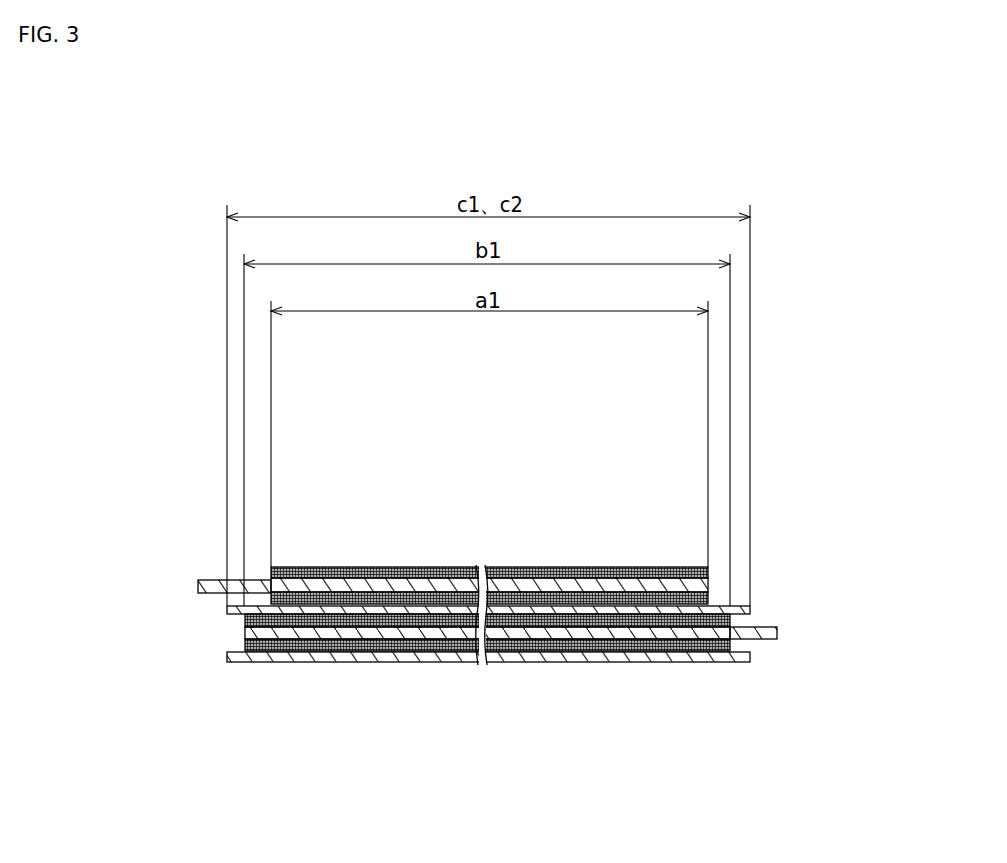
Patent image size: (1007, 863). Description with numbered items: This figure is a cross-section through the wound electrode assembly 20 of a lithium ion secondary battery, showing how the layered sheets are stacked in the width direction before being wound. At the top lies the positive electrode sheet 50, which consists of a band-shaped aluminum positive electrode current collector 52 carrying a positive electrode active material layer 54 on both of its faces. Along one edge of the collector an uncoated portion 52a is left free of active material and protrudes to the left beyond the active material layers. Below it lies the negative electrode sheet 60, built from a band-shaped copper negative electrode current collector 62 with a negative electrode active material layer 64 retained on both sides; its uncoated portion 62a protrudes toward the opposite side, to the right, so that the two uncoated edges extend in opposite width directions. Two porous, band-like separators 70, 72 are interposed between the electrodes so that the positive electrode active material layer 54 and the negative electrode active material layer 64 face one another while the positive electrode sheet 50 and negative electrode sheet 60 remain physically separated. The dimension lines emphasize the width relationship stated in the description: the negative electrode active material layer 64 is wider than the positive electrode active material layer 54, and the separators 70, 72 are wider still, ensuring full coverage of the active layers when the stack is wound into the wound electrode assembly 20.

The wound electrode assembly 20 is at (360, 667).
The positive electrode sheet 50 is at (400, 542).
The positive electrode current collector 52 is at (422, 546).
The uncoated portion 52a is at (221, 578).
The positive electrode active material layer 54 is at (316, 596).
The negative electrode sheet 60 is at (555, 673).
The negative electrode current collector 62 is at (554, 661).
The uncoated portion 62a is at (777, 627).
The negative electrode active material layer 64 is at (587, 622).
The separator 70 is at (243, 615).
The separator 72 is at (238, 663).